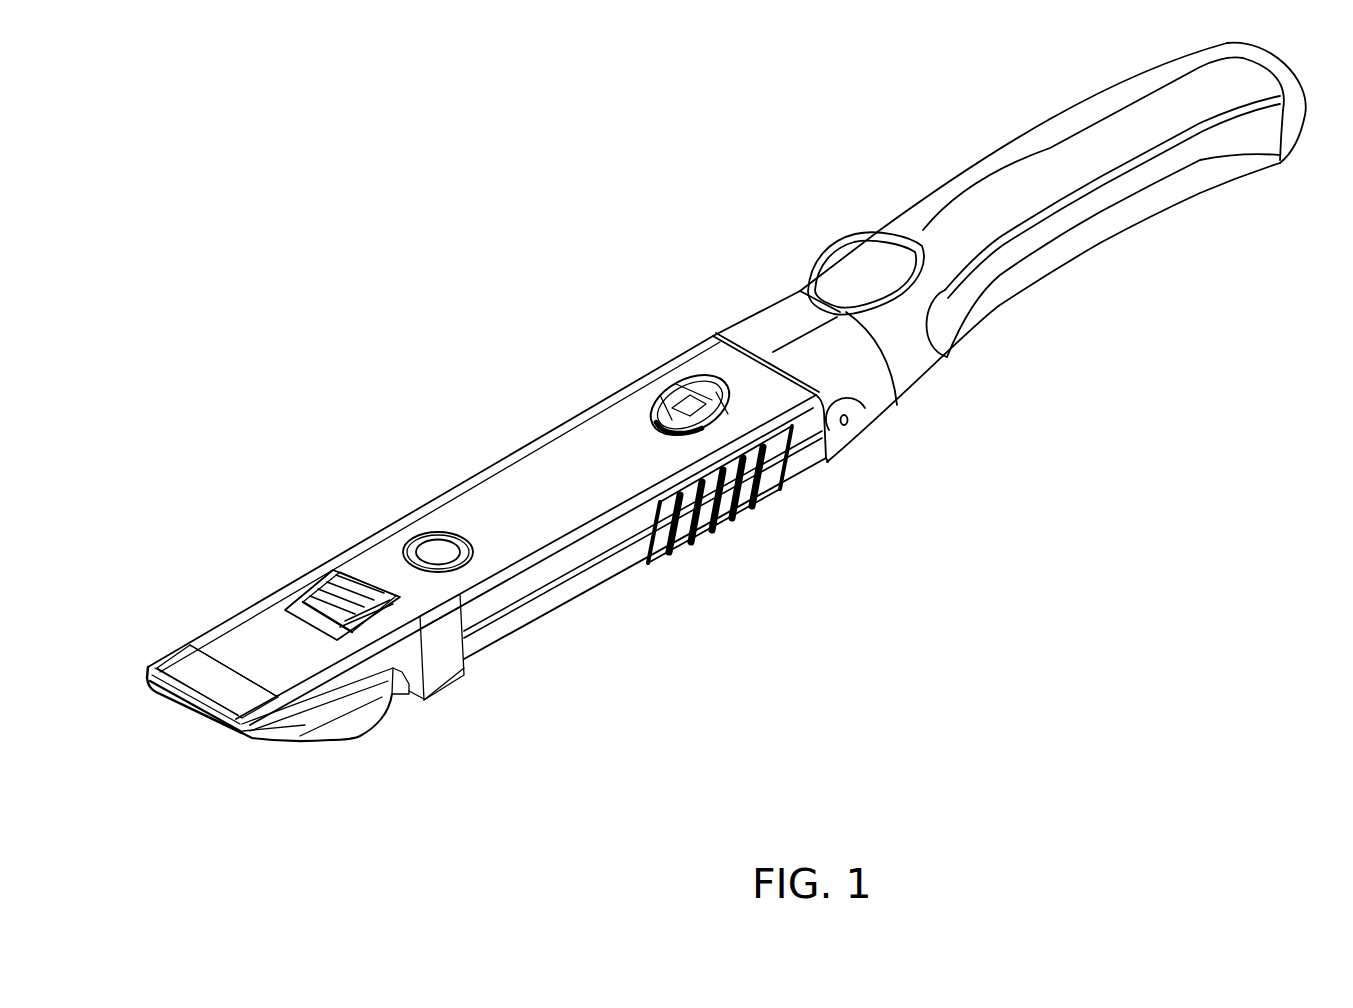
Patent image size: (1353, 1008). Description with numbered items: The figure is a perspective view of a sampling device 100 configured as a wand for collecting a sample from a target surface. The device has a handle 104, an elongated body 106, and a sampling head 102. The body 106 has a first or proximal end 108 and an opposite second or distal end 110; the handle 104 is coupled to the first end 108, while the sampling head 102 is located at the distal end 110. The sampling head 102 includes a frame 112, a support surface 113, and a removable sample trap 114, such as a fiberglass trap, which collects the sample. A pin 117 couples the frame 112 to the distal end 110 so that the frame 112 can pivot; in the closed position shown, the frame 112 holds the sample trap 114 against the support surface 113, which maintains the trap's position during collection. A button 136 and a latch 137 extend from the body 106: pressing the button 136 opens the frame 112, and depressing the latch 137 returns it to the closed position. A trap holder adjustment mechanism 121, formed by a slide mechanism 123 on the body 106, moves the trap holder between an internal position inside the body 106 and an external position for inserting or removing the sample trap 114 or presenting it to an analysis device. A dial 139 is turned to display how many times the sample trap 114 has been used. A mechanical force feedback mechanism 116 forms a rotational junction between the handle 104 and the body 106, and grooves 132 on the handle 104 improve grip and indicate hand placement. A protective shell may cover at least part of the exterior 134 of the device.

The sampling device 100 is at (276, 218).
The sampling head 102 is at (270, 608).
The handle 104 is at (1040, 190).
The body 106 is at (582, 440).
The first end 108 is at (757, 372).
The second end 110 is at (205, 668).
The frame 112 is at (357, 714).
The support surface 113 is at (178, 712).
The sample trap 114 is at (272, 742).
The mechanical force feedback mechanism 116 is at (820, 455).
The pin 117 is at (393, 680).
The trap holder adjustment mechanism 121 is at (651, 624).
The slide mechanism 123 is at (712, 517).
The grooves 132 is at (880, 277).
The exterior 134 is at (452, 522).
The button 136 is at (427, 546).
The latch 137 is at (363, 572).
The dial 139 is at (657, 395).